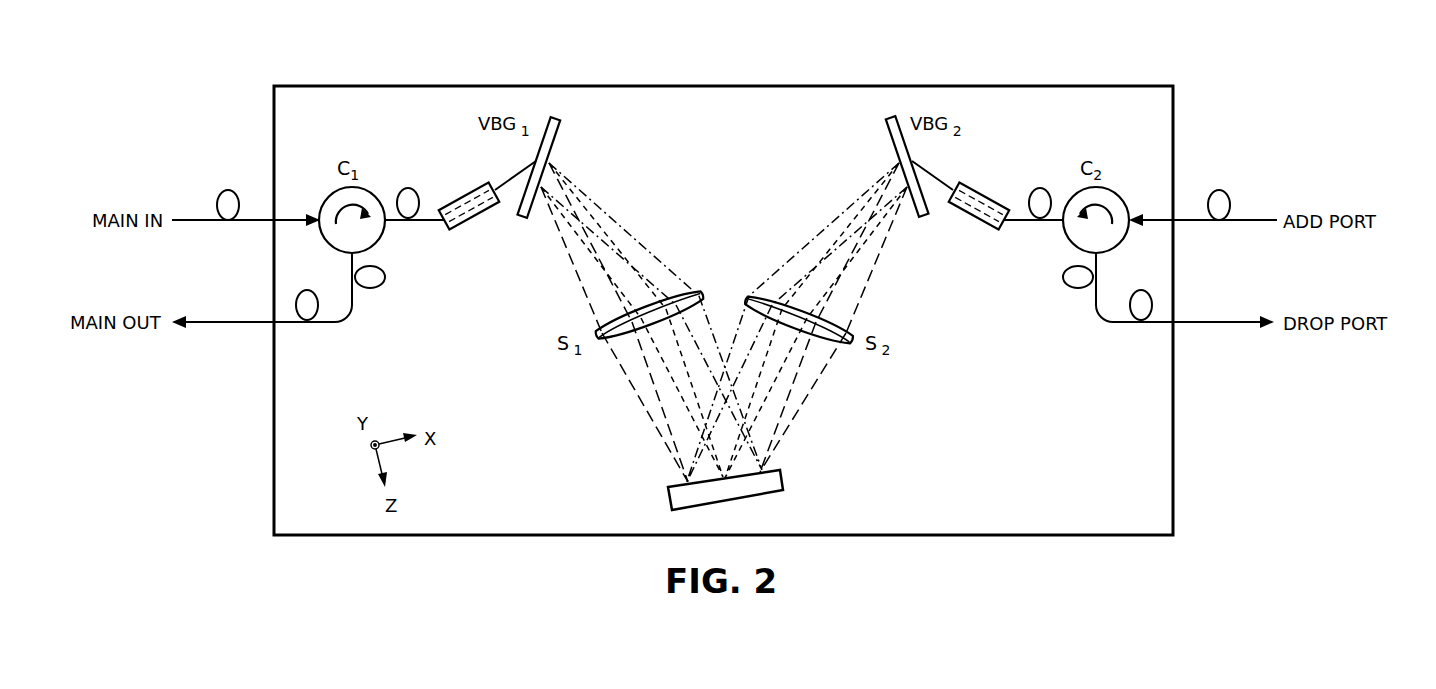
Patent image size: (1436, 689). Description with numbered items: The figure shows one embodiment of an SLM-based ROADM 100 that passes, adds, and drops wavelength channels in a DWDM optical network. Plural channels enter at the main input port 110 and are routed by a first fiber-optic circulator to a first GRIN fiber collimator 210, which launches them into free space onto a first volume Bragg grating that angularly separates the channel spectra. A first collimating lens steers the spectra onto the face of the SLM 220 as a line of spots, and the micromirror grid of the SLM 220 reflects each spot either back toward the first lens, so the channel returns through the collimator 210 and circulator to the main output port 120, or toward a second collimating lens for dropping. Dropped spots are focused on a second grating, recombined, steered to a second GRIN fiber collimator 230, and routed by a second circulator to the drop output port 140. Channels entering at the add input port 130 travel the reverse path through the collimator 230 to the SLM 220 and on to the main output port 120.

The ROADM 100 is at (871, 84).
The main input port 110 is at (198, 218).
The main output port 120 is at (228, 320).
The add input port 130 is at (1252, 218).
The drop output port 140 is at (1218, 320).
The first GRIN fiber collimator 210 is at (457, 195).
The SLM 220 is at (784, 482).
The second GRIN fiber collimator 230 is at (986, 194).